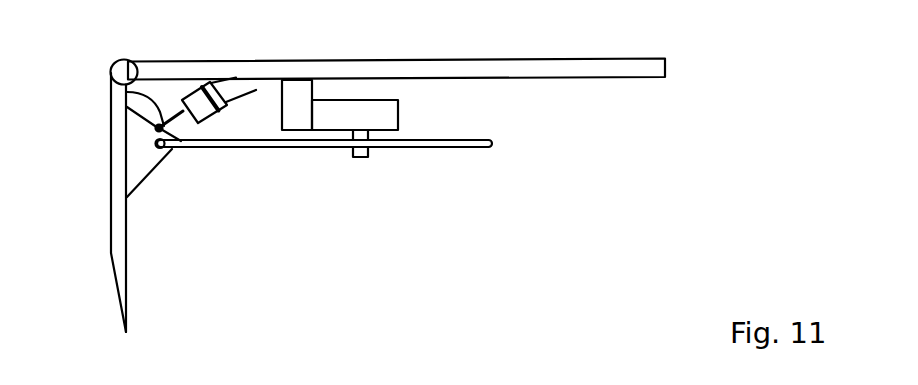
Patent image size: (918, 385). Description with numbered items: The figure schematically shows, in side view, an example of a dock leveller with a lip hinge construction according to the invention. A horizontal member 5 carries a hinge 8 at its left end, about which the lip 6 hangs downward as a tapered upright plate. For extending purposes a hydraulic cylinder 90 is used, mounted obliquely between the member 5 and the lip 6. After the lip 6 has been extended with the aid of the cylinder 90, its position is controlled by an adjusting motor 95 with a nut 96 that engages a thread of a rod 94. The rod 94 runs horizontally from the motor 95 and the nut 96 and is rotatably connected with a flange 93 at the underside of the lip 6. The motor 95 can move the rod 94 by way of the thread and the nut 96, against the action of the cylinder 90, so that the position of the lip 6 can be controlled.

The arm 5 is at (441, 60).
The pivot 8 is at (114, 63).
The lip 6 is at (111, 163).
The hydraulic cylinder 90 is at (111, 93).
The flange 93 is at (149, 176).
The rod 94 is at (321, 148).
The adjusting motor 95 is at (398, 113).
The nut 96 is at (360, 157).